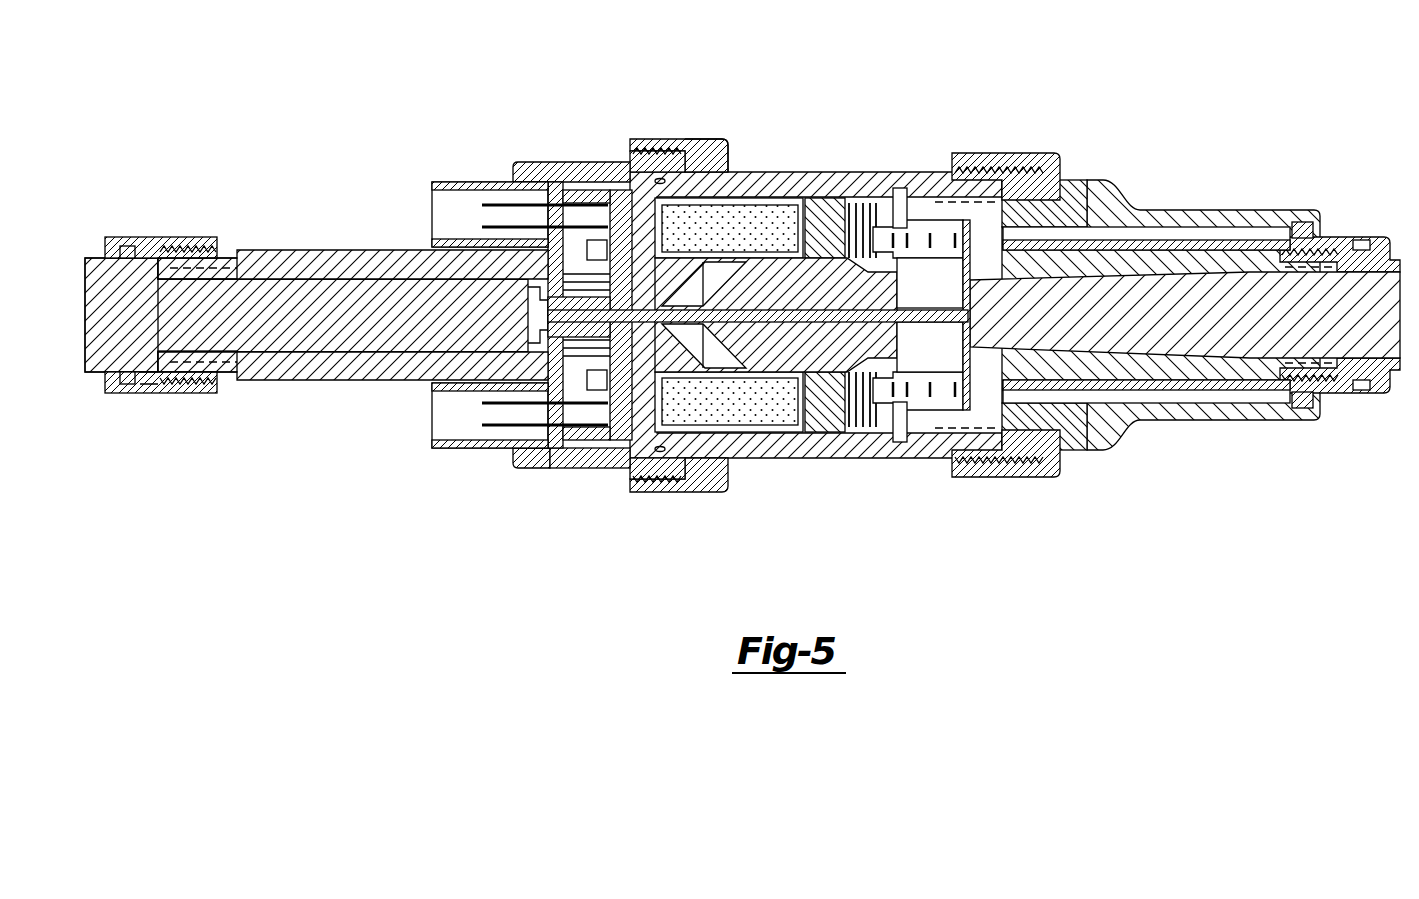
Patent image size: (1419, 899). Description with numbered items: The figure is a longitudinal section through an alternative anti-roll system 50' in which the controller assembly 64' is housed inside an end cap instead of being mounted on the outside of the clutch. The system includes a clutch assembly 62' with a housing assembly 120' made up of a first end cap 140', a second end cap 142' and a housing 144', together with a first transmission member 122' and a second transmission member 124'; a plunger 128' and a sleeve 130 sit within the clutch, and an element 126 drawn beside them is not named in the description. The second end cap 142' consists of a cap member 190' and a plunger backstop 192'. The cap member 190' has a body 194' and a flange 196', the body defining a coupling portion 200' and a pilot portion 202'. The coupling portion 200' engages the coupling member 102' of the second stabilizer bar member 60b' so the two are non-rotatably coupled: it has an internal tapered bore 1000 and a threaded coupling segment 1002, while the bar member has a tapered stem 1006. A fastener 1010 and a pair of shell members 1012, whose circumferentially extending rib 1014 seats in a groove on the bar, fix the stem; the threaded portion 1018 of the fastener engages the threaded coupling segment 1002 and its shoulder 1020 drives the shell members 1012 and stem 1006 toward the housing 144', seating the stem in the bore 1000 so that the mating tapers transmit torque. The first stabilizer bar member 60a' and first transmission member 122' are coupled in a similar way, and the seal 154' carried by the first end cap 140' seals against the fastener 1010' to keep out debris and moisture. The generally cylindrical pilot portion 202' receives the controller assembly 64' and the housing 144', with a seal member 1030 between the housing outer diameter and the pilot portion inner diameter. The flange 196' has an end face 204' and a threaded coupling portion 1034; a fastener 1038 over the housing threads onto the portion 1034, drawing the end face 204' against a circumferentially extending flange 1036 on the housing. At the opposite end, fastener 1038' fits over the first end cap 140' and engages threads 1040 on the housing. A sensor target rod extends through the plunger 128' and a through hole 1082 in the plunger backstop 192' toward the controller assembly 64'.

The anti-roll system 50' is at (800, 46).
The clutch assembly 62' is at (873, 103).
The controller assembly 64' is at (530, 314).
The first stabilizer bar member 60a' is at (1185, 315).
The second stabilizer bar member 60b' is at (526, 289).
The coupling member 102' is at (343, 352).
The housing assembly 120' is at (816, 352).
The first transmission member 122' is at (1146, 286).
The second transmission member 124' is at (1065, 288).
The porous insert 126 is at (796, 215).
The plunger 128' is at (776, 315).
The sleeve 130 is at (898, 222).
The first end cap 140' is at (1161, 303).
The second end cap 142' is at (568, 139).
The housing 144' is at (913, 357).
The seal 154' is at (1342, 299).
The cap member 190' is at (541, 353).
The plunger backstop 192' is at (601, 345).
The body 194' is at (486, 471).
The flange 196' is at (679, 492).
The coupling portion 200' is at (353, 315).
The pilot portion 202' is at (590, 501).
The end face 204' is at (709, 484).
The internal tapered bore 1000 is at (408, 358).
The threaded coupling segment 1002 is at (215, 255).
The tapered stem 1006 is at (293, 340).
The fastener 1010 is at (161, 285).
The fastener 1010' is at (1340, 346).
The shell members 1012 is at (128, 250).
The circumferentially extending rib 1014 is at (125, 370).
The threaded portion 1018 is at (133, 262).
The shoulder 1020 is at (113, 395).
The seal member 1030 is at (665, 182).
The threaded coupling portion 1034 is at (630, 150).
The circumferentially extending flange 1036 is at (680, 139).
The fastener 1038 is at (712, 123).
The fastener 1038' is at (1006, 281).
The threads 1040 is at (968, 455).
The through hole 1082 is at (650, 335).